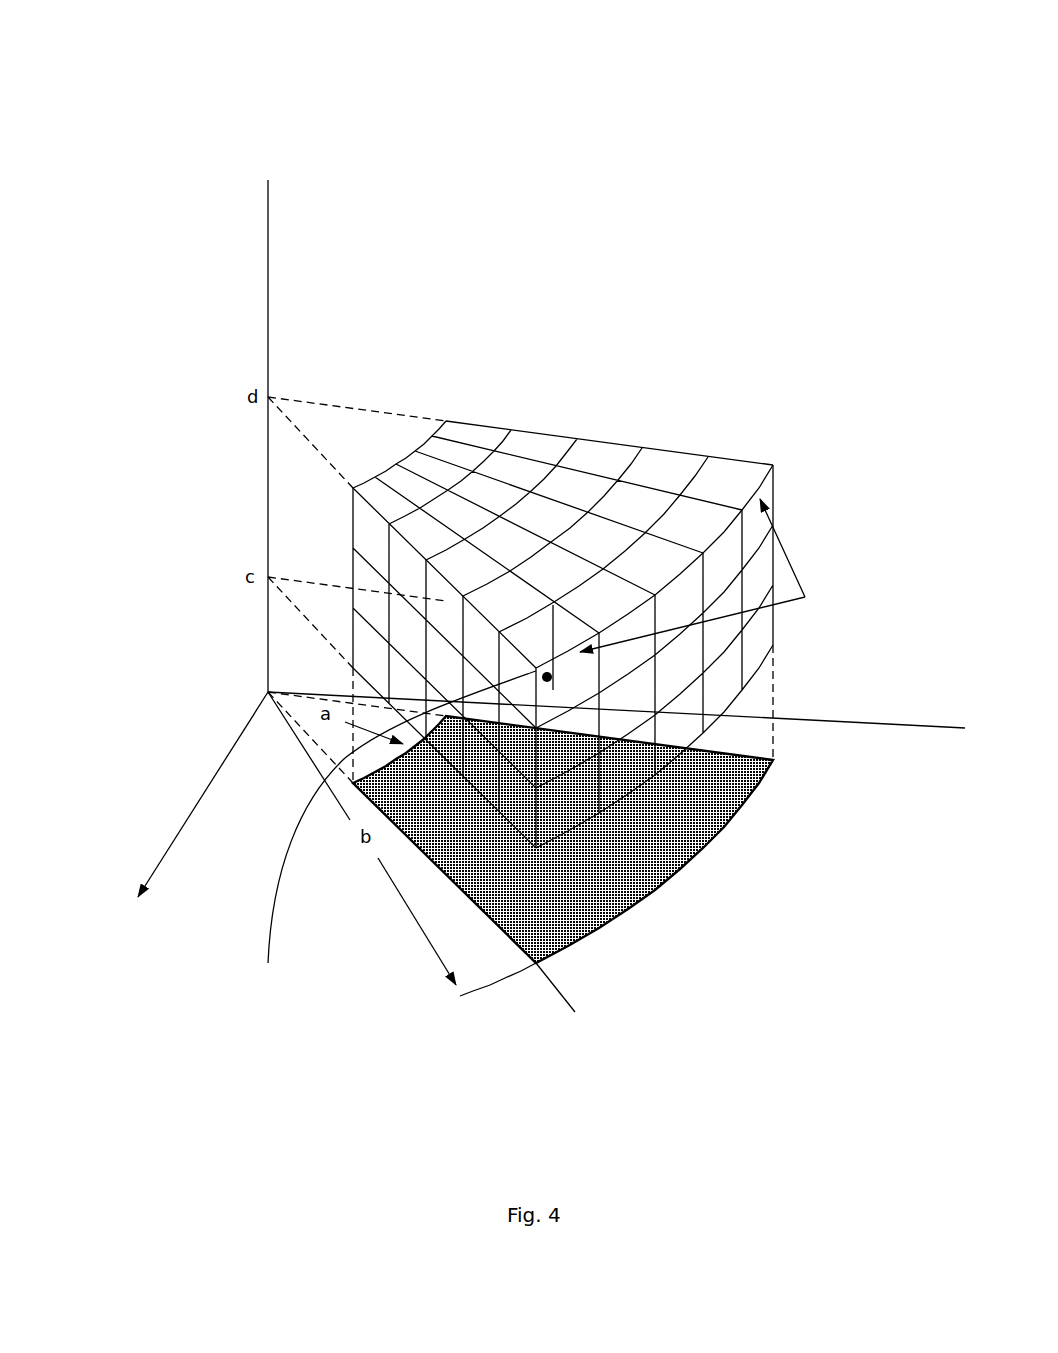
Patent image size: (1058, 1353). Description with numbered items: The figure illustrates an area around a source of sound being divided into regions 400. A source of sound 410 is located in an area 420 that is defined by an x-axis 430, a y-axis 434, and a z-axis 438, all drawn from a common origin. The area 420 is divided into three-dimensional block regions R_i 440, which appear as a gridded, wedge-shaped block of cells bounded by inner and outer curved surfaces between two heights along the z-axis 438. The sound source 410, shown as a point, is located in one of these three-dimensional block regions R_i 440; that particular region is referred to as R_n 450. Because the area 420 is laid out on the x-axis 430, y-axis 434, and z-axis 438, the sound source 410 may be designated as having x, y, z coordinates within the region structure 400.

The area around a source of sound being divided into regions 400 is at (503, 470).
The source of sound 410 is at (558, 690).
The area 420 is at (530, 403).
The x-axis 430 is at (122, 893).
The y-axis 434 is at (963, 778).
The z-axis 438 is at (222, 178).
The three-dimensional block regions R_i 440 is at (838, 597).
The block region R_n 450 is at (270, 1000).